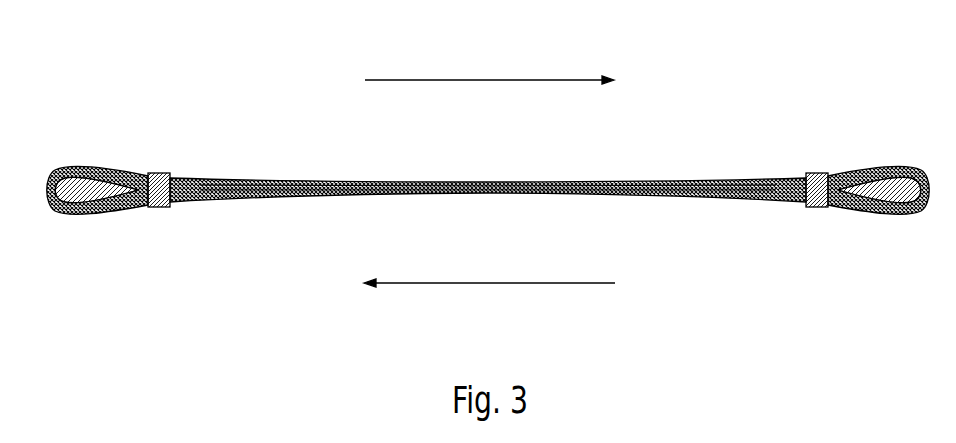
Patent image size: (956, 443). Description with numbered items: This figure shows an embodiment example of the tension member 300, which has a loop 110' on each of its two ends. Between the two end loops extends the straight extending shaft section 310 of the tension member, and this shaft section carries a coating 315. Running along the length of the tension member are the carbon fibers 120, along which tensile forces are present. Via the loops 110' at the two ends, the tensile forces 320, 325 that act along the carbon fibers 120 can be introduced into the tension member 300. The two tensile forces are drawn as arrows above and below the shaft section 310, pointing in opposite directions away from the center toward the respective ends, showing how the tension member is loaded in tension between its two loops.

The tension member 300 is at (75, 68).
The loop 110' is at (108, 166).
The straight extending shaft section 310 is at (423, 182).
The coating 315 is at (515, 182).
The carbon fibers 120 is at (570, 182).
The tensile force 320 is at (488, 80).
The tensile force 325 is at (492, 283).